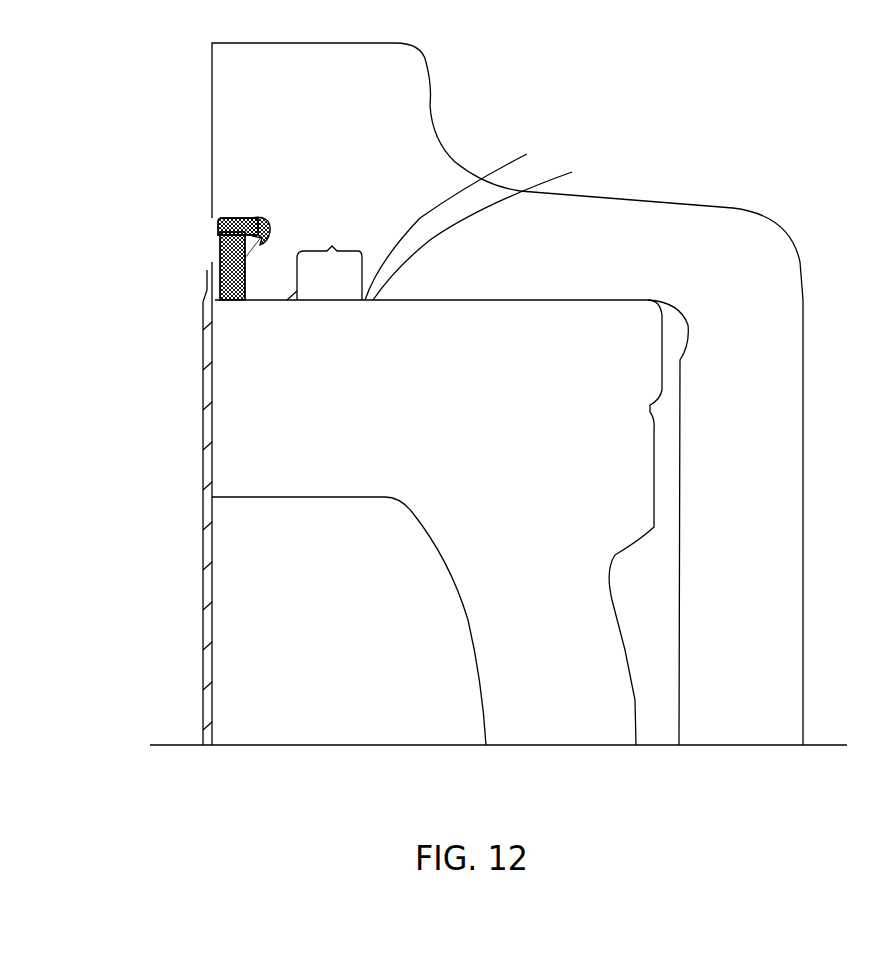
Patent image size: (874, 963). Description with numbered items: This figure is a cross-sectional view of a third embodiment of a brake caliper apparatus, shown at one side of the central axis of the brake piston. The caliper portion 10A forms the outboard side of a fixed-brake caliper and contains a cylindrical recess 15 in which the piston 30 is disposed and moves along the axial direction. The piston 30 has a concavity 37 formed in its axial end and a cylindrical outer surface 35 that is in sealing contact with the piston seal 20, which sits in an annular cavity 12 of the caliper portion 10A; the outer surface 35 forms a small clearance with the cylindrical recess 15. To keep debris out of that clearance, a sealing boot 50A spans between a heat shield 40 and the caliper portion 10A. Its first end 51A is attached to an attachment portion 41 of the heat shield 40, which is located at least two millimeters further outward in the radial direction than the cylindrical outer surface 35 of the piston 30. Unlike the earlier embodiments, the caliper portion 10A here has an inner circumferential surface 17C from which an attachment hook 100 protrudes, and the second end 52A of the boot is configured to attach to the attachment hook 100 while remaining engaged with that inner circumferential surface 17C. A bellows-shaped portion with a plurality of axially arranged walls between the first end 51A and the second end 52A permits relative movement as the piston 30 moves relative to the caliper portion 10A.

The attachment hook 100 is at (255, 219).
The caliper portion 10A is at (431, 180).
The annular cavity 12 is at (461, 223).
The cylindrical outer surface 35 is at (490, 230).
The cylindrical recess 15 is at (655, 573).
The piston 30 is at (465, 437).
The heat shield 40 is at (203, 502).
The concavity 37 is at (480, 668).
The piston seal 20 is at (328, 278).
The attachment portion 41 is at (222, 244).
The first end 51A is at (222, 247).
The second end 52A is at (227, 230).
The sealing boot 50A is at (173, 222).
The inner circumferential surface 17C is at (240, 220).